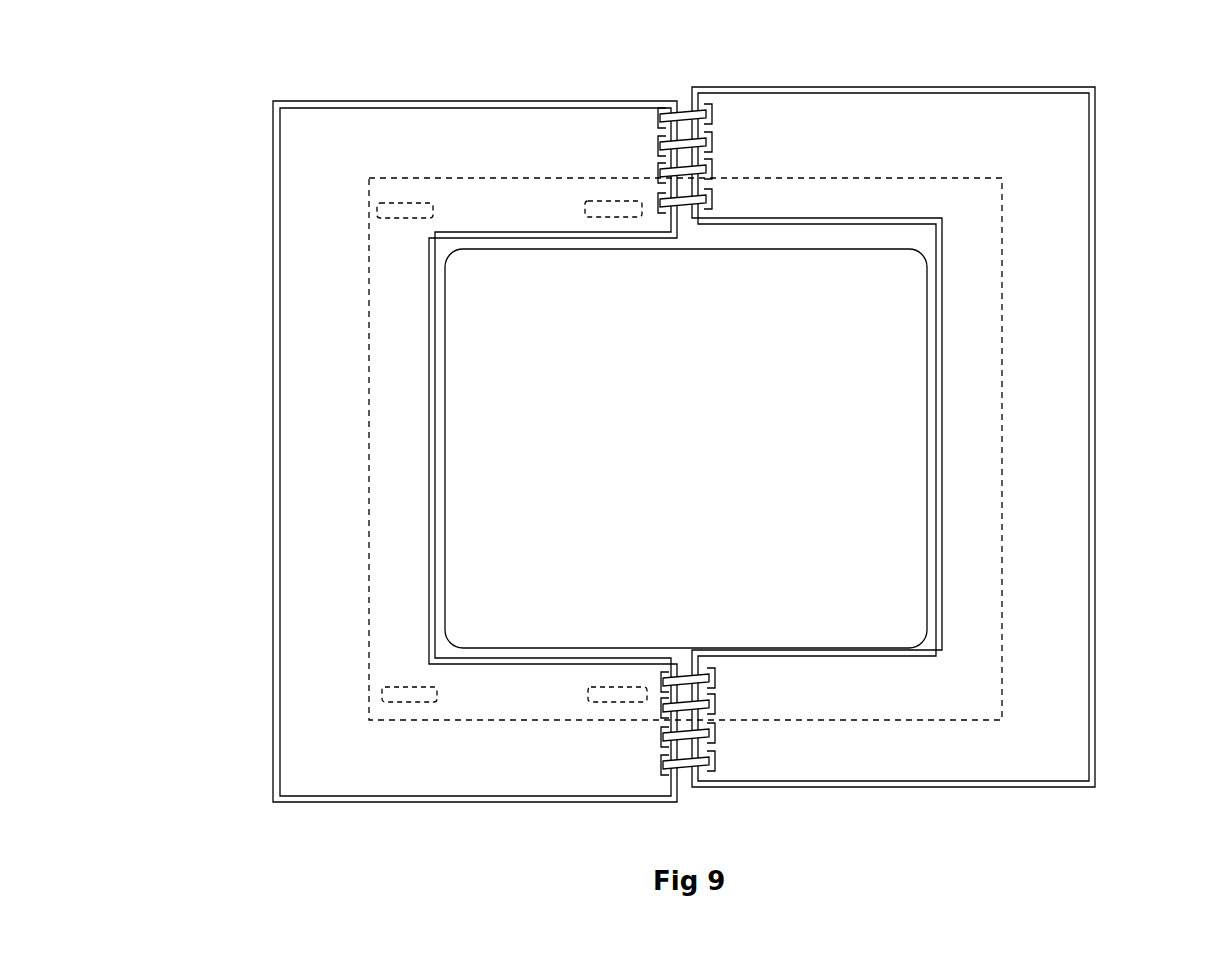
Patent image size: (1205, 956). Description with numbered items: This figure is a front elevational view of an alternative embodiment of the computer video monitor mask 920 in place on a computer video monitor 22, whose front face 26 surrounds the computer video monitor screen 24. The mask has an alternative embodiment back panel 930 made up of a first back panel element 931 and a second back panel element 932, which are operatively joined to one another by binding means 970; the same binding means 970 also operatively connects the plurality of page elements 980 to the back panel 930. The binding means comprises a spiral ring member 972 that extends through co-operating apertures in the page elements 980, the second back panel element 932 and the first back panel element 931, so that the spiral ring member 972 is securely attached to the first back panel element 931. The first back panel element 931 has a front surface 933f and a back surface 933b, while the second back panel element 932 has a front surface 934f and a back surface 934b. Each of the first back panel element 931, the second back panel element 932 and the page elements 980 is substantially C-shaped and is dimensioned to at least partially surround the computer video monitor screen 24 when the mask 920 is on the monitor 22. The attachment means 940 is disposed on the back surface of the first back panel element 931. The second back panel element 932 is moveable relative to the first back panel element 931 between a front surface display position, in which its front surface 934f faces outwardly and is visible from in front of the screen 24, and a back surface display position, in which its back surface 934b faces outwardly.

The computer video monitor mask 920 is at (645, 415).
The first back panel element 931 is at (475, 425).
The second back panel element 932 is at (870, 93).
The page elements 980 is at (392, 108).
The back panel 930 is at (712, 444).
The spiral ring member 972 is at (706, 113).
The binding means 970 is at (702, 232).
The front surface of the first back panel element 933f is at (545, 167).
The front surface of the second back panel element 934f is at (890, 150).
The back surface of the first back panel element 933b is at (298, 229).
The back surface of the second back panel element 934b is at (1072, 224).
The computer video monitor 22 is at (368, 297).
The attachment means 940 is at (433, 211).
The front face 26 is at (589, 247).
The computer video monitor screen 24 is at (696, 435).